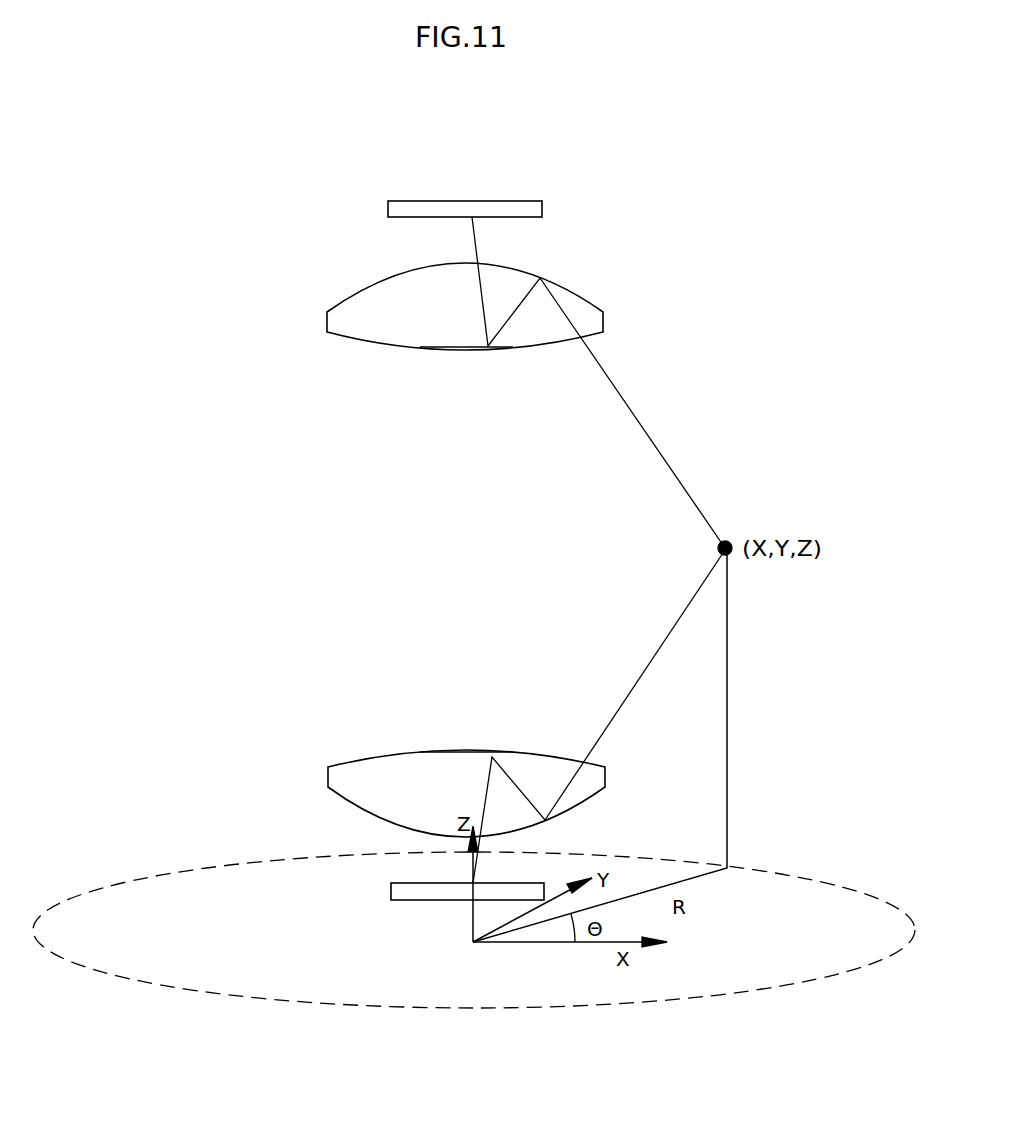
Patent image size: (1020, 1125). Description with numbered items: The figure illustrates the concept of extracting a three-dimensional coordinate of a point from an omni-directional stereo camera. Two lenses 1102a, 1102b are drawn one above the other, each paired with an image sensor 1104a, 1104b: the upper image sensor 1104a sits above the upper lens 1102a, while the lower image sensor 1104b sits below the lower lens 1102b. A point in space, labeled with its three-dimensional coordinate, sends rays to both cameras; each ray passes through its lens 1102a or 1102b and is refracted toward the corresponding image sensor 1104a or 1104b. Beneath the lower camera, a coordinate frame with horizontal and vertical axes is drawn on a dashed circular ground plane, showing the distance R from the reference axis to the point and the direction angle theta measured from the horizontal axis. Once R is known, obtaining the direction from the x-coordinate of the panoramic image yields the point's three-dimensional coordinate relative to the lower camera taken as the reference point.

The image sensor 1104a is at (542, 208).
The lens 1102a is at (580, 293).
The lens 1102b is at (545, 752).
The image sensor 1104b is at (391, 890).